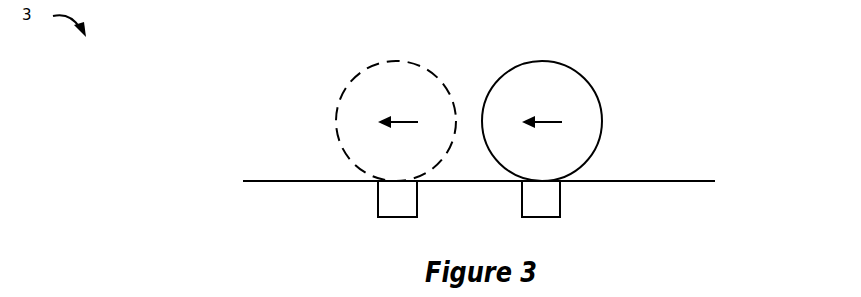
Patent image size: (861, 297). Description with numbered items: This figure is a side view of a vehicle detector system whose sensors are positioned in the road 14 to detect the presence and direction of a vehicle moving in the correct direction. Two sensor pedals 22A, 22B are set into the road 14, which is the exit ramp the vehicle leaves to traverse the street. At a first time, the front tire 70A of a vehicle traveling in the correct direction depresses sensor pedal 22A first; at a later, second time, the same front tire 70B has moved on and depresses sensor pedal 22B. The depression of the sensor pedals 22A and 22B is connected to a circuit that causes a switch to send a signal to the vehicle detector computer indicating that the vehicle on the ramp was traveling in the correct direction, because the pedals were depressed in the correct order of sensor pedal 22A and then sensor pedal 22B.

The road 14 is at (266, 181).
The front tire 70A is at (587, 82).
The front tire 70B is at (352, 83).
The sensor pedal 22A is at (541, 199).
The sensor pedal 22B is at (397, 199).